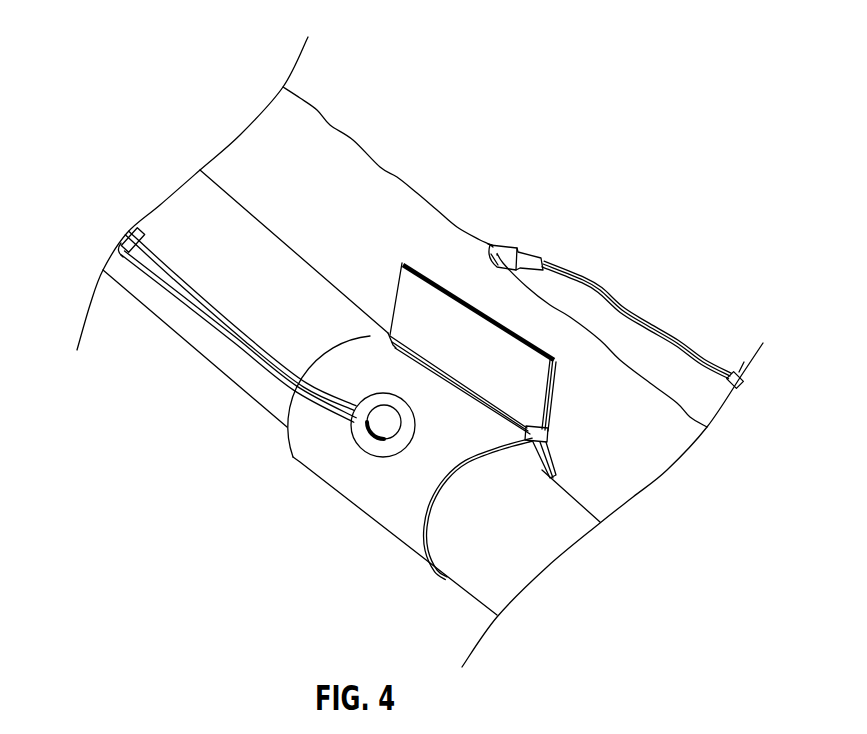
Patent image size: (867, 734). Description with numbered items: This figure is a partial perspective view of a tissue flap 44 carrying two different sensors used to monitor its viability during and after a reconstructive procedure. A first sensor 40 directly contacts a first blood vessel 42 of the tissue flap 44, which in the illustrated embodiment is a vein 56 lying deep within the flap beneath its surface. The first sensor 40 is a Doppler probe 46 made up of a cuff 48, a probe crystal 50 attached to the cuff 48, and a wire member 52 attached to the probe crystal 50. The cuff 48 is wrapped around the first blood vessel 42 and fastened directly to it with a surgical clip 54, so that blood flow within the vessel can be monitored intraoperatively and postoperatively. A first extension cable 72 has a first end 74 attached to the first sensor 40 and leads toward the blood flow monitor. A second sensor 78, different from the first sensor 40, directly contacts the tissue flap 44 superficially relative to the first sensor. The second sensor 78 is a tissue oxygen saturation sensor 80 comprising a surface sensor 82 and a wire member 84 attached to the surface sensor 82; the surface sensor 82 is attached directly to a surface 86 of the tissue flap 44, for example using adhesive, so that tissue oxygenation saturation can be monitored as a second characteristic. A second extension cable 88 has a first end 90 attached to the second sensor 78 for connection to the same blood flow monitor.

The first sensor 40 is at (361, 278).
The first blood vessel 42 is at (234, 174).
The tissue flap 44 is at (313, 110).
The Doppler probe 46 is at (563, 402).
The cuff 48 is at (427, 453).
The probe crystal 50 is at (388, 422).
The wire member 52 is at (243, 346).
The surgical clip 54 is at (550, 437).
The vein 56 is at (533, 530).
The first extension cable 72 is at (123, 253).
The first end 74 is at (140, 231).
The second sensor 78 is at (623, 245).
The tissue oxygen saturation sensor 80 is at (553, 243).
The surface sensor 82 is at (488, 245).
The wire member 84 is at (645, 315).
The surface 86 is at (663, 383).
The second extension cable 88 is at (744, 384).
The first end 90 is at (744, 362).